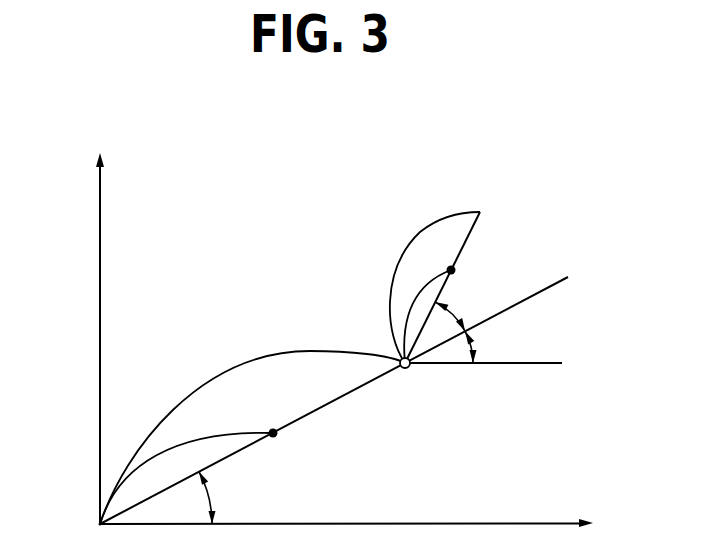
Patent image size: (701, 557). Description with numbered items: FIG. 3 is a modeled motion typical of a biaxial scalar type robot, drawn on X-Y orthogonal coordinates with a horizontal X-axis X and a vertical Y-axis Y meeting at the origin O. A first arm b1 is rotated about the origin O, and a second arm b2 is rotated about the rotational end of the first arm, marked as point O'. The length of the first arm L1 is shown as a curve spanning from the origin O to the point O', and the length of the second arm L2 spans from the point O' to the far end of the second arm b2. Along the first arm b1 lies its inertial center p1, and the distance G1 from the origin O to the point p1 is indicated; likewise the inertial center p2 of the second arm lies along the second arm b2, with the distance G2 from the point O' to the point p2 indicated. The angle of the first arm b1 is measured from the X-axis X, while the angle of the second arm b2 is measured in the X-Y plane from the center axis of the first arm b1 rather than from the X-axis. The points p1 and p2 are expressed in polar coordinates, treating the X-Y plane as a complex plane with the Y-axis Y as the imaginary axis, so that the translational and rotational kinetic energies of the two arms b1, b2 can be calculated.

The X-axis X is at (355, 523).
The Y-axis Y is at (90, 325).
The origin O is at (104, 539).
The rotational end of the first arm O' is at (428, 380).
The first arm b1 is at (341, 398).
The second arm b2 is at (478, 221).
The length of first arm L1 is at (252, 432).
The length of second arm L2 is at (435, 287).
The distance from origin O to point P1 G1 is at (186, 470).
The distance from point O' to point P2 G2 is at (427, 312).
The position of inertial center of first arm p1 is at (282, 445).
The position of inertial center of second arm p2 is at (466, 270).